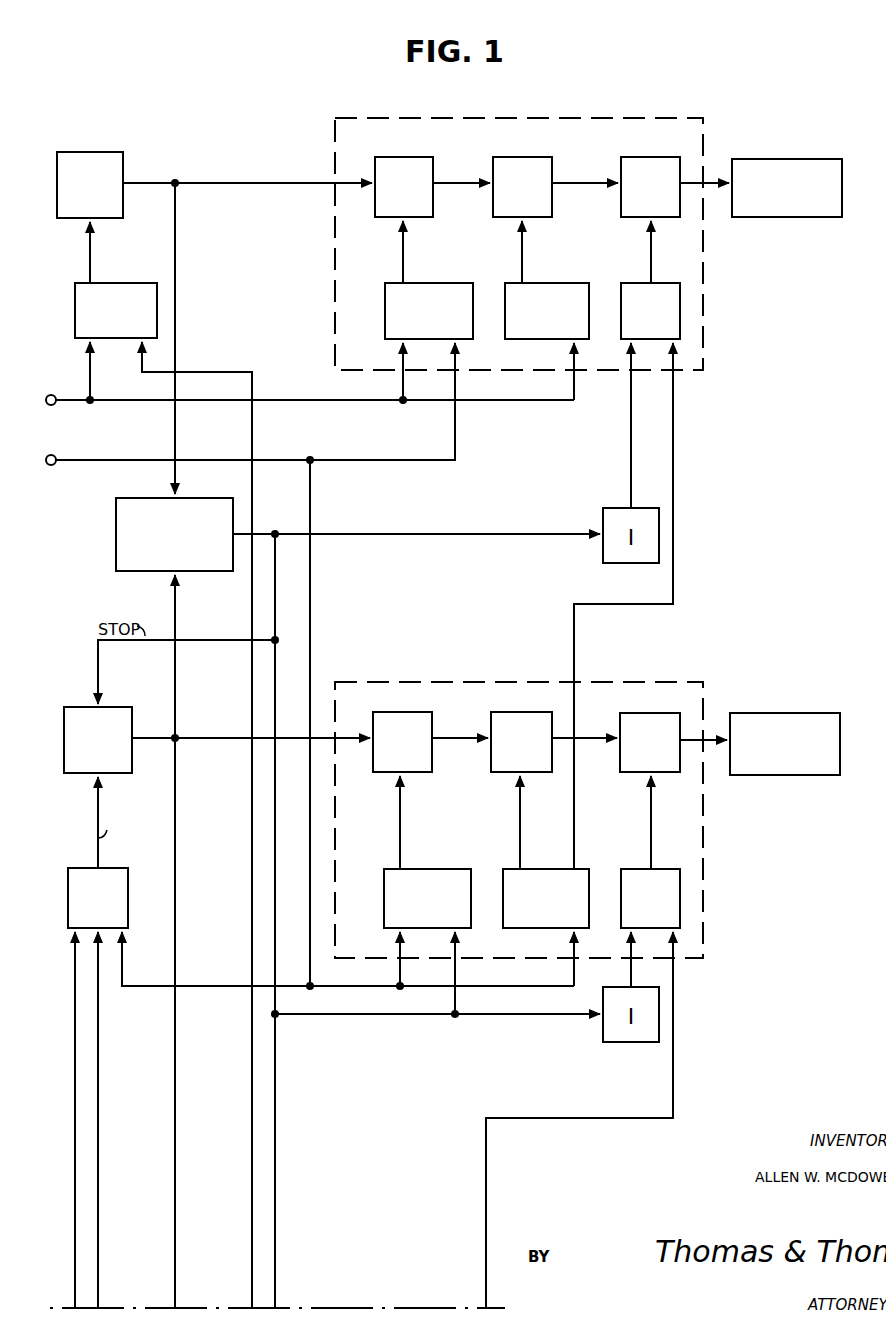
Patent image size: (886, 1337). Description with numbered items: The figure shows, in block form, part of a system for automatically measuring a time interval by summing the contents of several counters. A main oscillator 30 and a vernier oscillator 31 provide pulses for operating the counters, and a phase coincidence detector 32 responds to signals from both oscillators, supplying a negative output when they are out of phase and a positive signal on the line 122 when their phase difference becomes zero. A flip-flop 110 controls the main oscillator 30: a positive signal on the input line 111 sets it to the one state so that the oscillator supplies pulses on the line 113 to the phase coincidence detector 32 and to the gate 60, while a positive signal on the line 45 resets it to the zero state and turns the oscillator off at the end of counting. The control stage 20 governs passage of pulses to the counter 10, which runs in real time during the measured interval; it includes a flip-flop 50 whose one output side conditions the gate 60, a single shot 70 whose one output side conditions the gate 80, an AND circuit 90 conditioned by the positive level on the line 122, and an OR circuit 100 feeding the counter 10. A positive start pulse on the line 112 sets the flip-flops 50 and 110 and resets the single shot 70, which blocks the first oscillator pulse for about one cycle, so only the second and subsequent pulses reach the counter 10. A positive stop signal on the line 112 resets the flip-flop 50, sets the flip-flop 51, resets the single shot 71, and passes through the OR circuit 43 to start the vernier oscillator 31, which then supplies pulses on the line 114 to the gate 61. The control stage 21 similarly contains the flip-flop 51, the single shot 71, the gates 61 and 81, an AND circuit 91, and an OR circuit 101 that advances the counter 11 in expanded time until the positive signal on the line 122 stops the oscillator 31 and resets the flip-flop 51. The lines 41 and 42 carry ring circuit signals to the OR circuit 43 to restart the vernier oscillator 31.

The counter 10 is at (830, 159).
The counter 11 is at (838, 718).
The control stage 20 is at (703, 140).
The control stage 21 is at (705, 880).
The main oscillator 30 is at (100, 152).
The vernier oscillator 31 is at (75, 707).
The phase coincidence detector 32 is at (116, 552).
The line 41 is at (98, 1130).
The line 42 is at (75, 1130).
The OR circuit 43 is at (75, 868).
The line 45 is at (232, 372).
The flip-flop 50 is at (455, 283).
The flip-flop 51 is at (455, 869).
The gate 60 is at (400, 157).
The gate 61 is at (415, 712).
The single shot 70 is at (572, 283).
The single shot 71 is at (586, 869).
The gate 80 is at (520, 157).
The gate 81 is at (520, 712).
The AND circuit 90 is at (648, 283).
The AND circuit 91 is at (648, 869).
The OR circuit 100 is at (648, 157).
The OR circuit 101 is at (642, 713).
The flip-flop 110 is at (75, 300).
The input line 111 is at (72, 396).
The line 112 is at (80, 465).
The line 113 is at (178, 282).
The line 114 is at (178, 702).
The line 122 is at (345, 534).